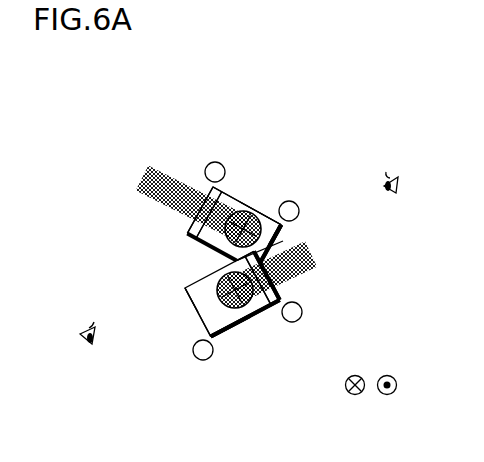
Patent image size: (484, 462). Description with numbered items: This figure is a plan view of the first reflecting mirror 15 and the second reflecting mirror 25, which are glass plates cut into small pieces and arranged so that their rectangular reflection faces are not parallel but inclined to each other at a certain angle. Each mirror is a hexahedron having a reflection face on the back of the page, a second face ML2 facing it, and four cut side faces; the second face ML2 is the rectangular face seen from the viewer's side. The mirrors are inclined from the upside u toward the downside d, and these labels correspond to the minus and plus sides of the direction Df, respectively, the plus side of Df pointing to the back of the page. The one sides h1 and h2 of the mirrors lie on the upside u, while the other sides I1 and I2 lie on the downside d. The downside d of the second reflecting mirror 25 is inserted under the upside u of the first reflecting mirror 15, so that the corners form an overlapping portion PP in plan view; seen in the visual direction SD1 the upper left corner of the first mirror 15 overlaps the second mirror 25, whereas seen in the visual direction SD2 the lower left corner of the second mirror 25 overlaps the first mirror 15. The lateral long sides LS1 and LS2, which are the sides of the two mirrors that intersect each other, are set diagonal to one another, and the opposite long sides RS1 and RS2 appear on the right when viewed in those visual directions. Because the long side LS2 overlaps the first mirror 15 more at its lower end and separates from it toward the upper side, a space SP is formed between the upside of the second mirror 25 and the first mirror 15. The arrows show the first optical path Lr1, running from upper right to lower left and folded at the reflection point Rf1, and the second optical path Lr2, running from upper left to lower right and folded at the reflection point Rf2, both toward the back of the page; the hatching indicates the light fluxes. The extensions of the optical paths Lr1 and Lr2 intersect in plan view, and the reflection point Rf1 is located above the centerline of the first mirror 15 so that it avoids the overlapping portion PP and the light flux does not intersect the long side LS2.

The second reflecting mirror 25 is at (279, 223).
The first reflecting mirror 15 is at (199, 315).
The second optical path Lr2 is at (152, 182).
The first optical path Lr1 is at (295, 257).
The second face ML2 is at (234, 198).
The long side of second reflecting mirror RS2 is at (254, 209).
The long side of first reflecting mirror RS1 is at (232, 326).
The reflection point Rf2 is at (268, 216).
The reflection point Rf1 is at (248, 318).
The one side of second reflecting mirror h2 is at (205, 181).
The one side of first reflecting mirror h1 is at (275, 290).
The upside u is at (253, 242).
The downside d is at (246, 280).
The other side of second reflecting mirror I2 is at (284, 229).
The other side of first reflecting mirror I1 is at (192, 302).
The overlapping portion PP is at (283, 241).
The space SP is at (200, 262).
The long side of second reflecting mirror LS2 is at (187, 236).
The long side of first reflecting mirror LS1 is at (186, 288).
The visual direction SD2 is at (398, 197).
The visual direction SD1 is at (97, 348).
The direction Df is at (374, 400).